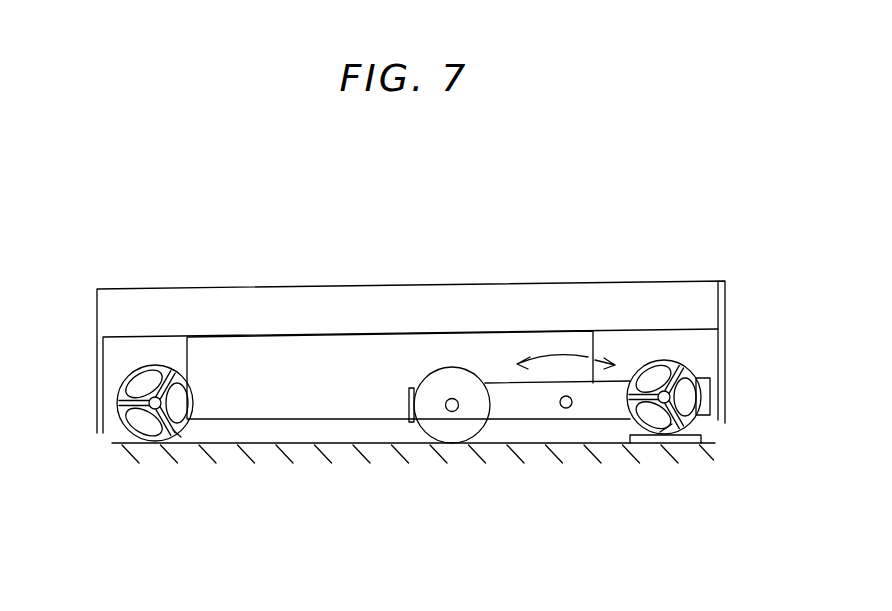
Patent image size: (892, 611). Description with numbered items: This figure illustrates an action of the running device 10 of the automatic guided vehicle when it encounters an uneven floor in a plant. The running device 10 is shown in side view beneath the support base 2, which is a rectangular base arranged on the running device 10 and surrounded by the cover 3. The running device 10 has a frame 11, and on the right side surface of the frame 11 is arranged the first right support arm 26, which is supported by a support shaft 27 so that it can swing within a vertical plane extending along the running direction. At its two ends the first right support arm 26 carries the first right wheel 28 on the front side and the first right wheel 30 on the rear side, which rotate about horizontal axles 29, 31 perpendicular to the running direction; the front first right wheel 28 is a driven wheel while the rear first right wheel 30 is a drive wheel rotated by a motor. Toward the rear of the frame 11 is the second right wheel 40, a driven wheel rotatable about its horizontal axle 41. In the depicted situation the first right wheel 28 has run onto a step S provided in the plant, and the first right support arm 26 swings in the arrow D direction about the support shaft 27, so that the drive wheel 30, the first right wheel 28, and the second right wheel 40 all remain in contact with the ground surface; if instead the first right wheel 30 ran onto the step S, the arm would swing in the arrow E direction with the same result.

The support base 2 is at (640, 281).
The cover 3 is at (727, 332).
The running device 10 is at (250, 212).
The frame 11 is at (362, 334).
The first right support arm 26 is at (521, 412).
The support shaft 27 is at (565, 410).
The first right wheel 28 is at (633, 437).
The horizontal axle 29 is at (693, 438).
The first right wheel 30 is at (438, 432).
The horizontal axle 31 is at (455, 411).
The second right wheel 40 is at (145, 430).
The horizontal axle 41 is at (178, 432).
The step S is at (668, 440).